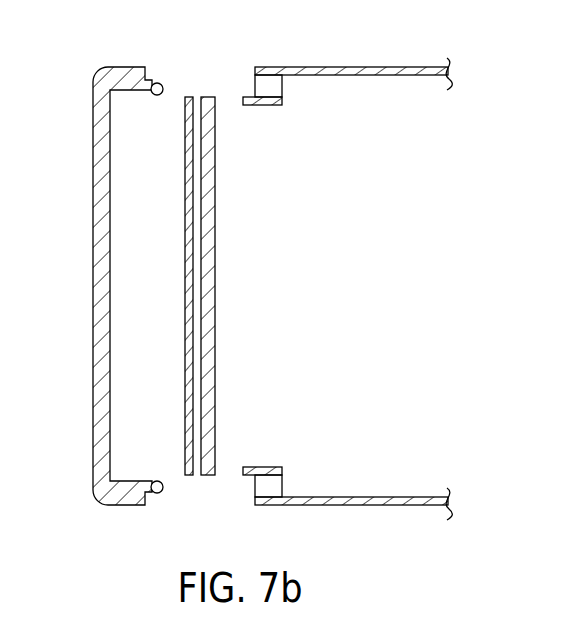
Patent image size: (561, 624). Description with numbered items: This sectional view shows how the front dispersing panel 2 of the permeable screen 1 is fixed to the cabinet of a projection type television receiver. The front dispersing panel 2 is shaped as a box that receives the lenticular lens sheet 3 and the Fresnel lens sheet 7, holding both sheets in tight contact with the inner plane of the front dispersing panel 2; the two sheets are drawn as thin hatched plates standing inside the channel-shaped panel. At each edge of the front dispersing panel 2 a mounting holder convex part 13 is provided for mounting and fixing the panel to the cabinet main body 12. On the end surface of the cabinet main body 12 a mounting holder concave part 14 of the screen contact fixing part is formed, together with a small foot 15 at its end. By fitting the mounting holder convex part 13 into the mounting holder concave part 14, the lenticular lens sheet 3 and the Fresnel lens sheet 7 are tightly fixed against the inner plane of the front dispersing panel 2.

The permeable screen 1 is at (220, 63).
The front dispersing panel 2 is at (93, 178).
The lenticular lens sheet 3 is at (185, 159).
The Fresnel lens sheet 7 is at (215, 195).
The cabinet main body 12 is at (346, 68).
The mounting holder convex part 13 is at (163, 86).
The mounting holder concave part 14 is at (258, 78).
The foot 15 is at (265, 103).